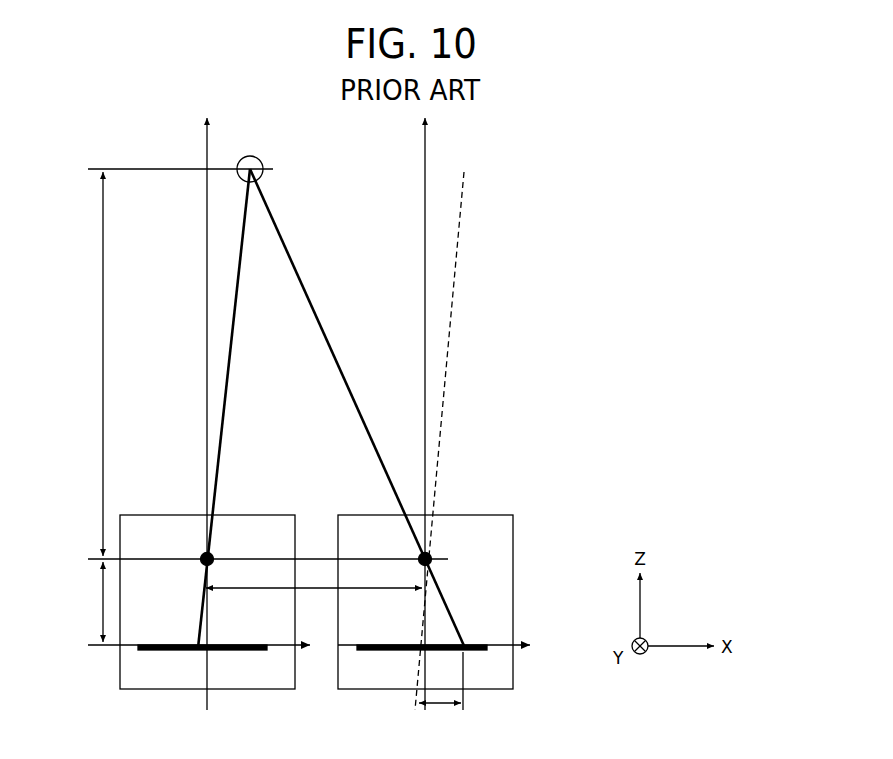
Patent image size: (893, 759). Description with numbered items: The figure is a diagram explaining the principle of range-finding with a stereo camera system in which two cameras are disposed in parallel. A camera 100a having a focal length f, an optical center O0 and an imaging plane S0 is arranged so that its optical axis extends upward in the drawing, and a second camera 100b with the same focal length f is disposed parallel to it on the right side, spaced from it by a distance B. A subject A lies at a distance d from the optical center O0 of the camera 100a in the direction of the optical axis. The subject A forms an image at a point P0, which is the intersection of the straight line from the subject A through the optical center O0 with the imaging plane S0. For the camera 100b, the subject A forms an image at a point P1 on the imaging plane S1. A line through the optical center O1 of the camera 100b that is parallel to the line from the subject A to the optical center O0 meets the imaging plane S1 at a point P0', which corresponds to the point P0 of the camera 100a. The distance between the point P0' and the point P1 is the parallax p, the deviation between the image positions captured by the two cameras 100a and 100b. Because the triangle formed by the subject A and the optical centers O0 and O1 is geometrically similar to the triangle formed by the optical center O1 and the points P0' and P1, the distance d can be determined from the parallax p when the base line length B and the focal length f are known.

The camera 100a is at (257, 515).
The camera 100b is at (475, 515).
The subject A is at (252, 158).
The optical center O0 is at (220, 548).
The optical center O1 is at (438, 548).
The imaging plane S0 is at (252, 644).
The imaging plane S1 is at (477, 644).
The point P0 is at (171, 689).
The point P0' is at (387, 689).
The point P1 is at (465, 655).
The distance d is at (93, 364).
The focal length f is at (92, 602).
The base line length B is at (314, 578).
The parallax p is at (441, 688).